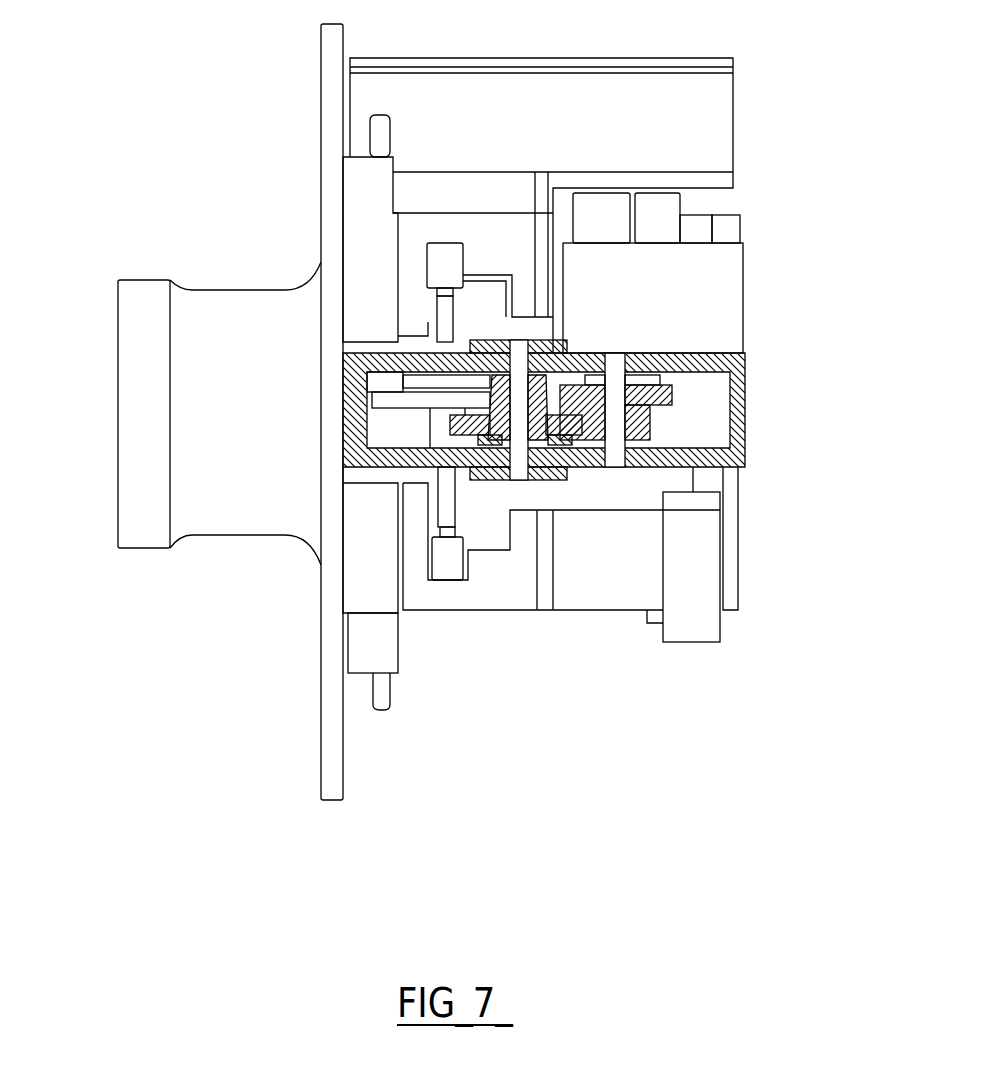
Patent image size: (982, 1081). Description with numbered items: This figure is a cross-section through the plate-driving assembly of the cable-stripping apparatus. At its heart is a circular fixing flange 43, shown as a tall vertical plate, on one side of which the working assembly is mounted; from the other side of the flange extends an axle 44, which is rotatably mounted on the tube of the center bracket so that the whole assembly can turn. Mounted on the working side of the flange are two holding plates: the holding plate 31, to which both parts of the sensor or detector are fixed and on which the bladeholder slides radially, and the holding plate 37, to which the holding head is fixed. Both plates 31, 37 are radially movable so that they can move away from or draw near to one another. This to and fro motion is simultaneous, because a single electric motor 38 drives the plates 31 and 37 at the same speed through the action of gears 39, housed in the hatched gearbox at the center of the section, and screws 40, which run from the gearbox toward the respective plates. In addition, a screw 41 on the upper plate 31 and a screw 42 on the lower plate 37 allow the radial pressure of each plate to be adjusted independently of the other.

The holding plate 31 is at (490, 240).
The holding plate 37 is at (490, 595).
The electric motor 38 is at (720, 293).
The gears 39 is at (687, 400).
The screws 40 is at (428, 325).
The screw 41 is at (376, 128).
The screw 42 is at (388, 710).
The circular fixing flange 43 is at (330, 697).
The axle 44 is at (153, 553).